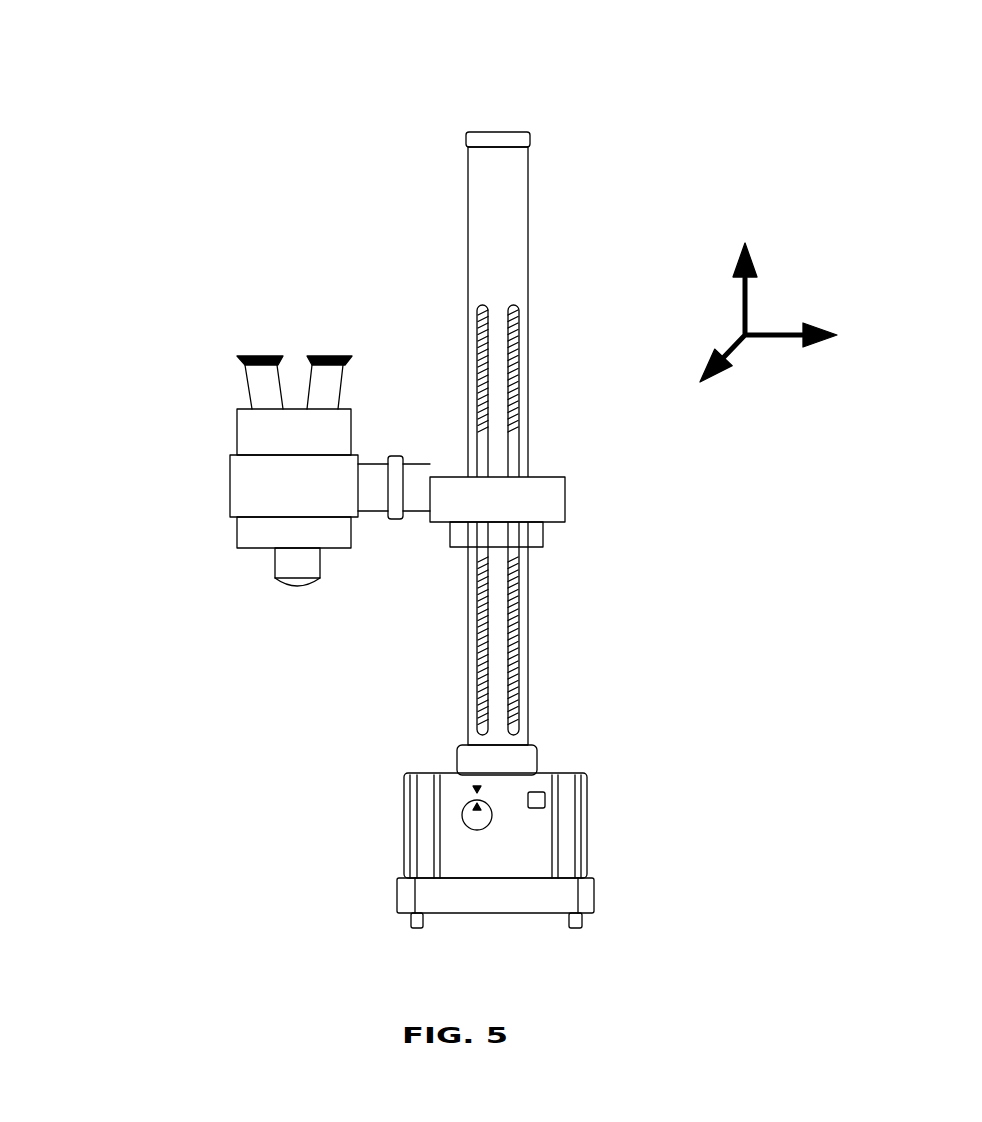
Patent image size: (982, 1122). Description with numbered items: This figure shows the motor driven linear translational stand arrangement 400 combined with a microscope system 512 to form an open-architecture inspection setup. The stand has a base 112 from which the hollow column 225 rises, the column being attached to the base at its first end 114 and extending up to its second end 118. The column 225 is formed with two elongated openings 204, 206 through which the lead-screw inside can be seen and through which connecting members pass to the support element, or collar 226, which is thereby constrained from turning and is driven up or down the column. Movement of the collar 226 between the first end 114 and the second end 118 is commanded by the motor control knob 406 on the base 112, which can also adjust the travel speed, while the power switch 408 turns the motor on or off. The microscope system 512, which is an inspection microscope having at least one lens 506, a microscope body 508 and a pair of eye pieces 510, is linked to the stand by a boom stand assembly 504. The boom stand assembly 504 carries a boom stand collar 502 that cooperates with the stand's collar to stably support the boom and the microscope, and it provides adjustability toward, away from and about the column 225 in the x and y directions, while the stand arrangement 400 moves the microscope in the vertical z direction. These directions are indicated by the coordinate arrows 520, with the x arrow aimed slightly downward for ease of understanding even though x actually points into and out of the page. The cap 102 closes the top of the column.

The motor driven linear translational stand arrangement 400 is at (262, 75).
The column cap 102 is at (488, 131).
The second end 118 is at (545, 383).
The hollow column 225 is at (528, 262).
The elongated opening 206 is at (480, 455).
The elongated opening 204 is at (517, 455).
The boom stand collar 502 is at (567, 502).
The support element (collar) 226 is at (545, 532).
The boom stand assembly 504 is at (397, 558).
The microscope system 512 is at (236, 456).
The microscope body 508 is at (237, 432).
The eye pieces 510 is at (253, 312).
The lens 506 is at (288, 612).
The first end 114 is at (477, 790).
The base 112 is at (565, 773).
The motor control knob 406 is at (477, 831).
The power switch 408 is at (537, 808).
The coordinate arrows 520 is at (841, 257).